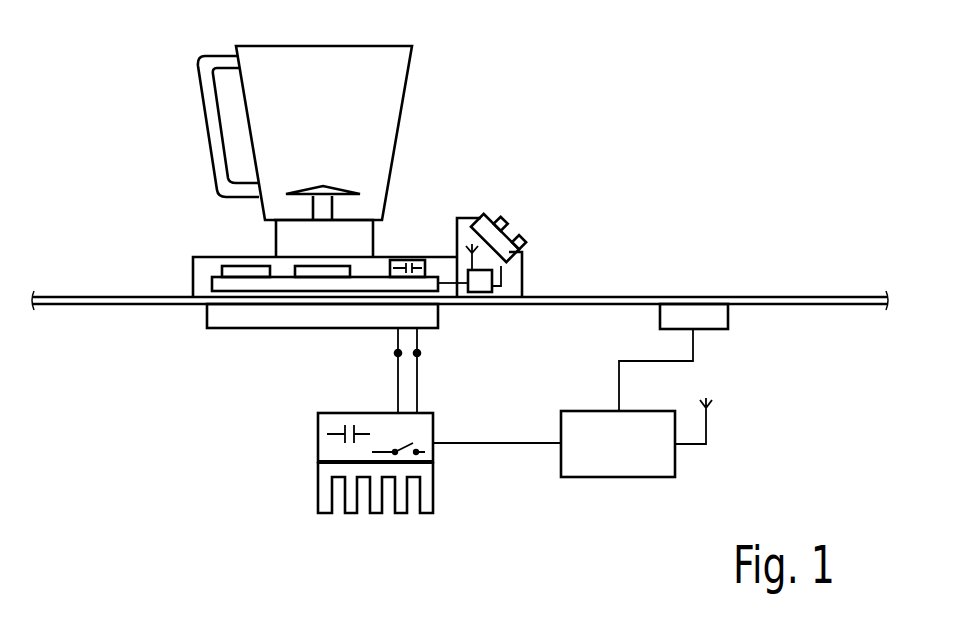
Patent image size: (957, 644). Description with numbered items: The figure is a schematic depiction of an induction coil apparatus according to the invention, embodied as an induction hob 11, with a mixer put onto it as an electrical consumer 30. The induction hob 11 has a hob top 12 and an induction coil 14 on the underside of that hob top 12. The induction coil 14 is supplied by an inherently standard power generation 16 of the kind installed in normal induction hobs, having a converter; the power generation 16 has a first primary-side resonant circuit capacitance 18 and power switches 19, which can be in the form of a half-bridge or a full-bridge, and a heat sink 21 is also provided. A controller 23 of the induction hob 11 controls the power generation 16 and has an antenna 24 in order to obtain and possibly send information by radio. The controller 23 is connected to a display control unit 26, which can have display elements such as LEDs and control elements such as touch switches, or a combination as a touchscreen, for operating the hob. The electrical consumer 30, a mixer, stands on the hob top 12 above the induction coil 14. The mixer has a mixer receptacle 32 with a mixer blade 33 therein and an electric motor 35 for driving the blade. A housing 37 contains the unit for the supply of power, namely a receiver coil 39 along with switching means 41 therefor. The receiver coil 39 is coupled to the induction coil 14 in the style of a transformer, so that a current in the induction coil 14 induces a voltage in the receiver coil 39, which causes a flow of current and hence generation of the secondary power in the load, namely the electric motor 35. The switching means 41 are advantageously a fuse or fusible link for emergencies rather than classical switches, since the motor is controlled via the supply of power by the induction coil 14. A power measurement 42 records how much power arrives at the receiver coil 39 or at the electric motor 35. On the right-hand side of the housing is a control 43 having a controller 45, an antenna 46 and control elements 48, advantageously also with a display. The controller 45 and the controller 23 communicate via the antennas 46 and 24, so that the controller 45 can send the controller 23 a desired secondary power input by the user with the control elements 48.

The induction hob 11 is at (766, 117).
The hob top 12 is at (833, 295).
The induction coil 14 is at (222, 352).
The power generation 16 is at (340, 461).
The first primary-side resonant circuit capacitance 18 is at (310, 429).
The power switches 19 is at (436, 428).
The heat sink 21 is at (343, 528).
The controller 23 is at (590, 496).
The antenna 24 is at (708, 432).
The display control unit 26 is at (735, 328).
The electrical consumer 30 is at (554, 105).
The mixer receptacle 32 is at (405, 86).
The mixer blade 33 is at (338, 188).
The electric motor 35 is at (275, 242).
The housing 37 is at (150, 266).
The receiver coil 39 is at (214, 278).
The switching means 41 is at (227, 267).
The power measurement 42 is at (312, 268).
The control 43 is at (535, 278).
The controller 45 is at (488, 279).
The antenna 46 is at (475, 219).
The control elements 48 is at (529, 219).